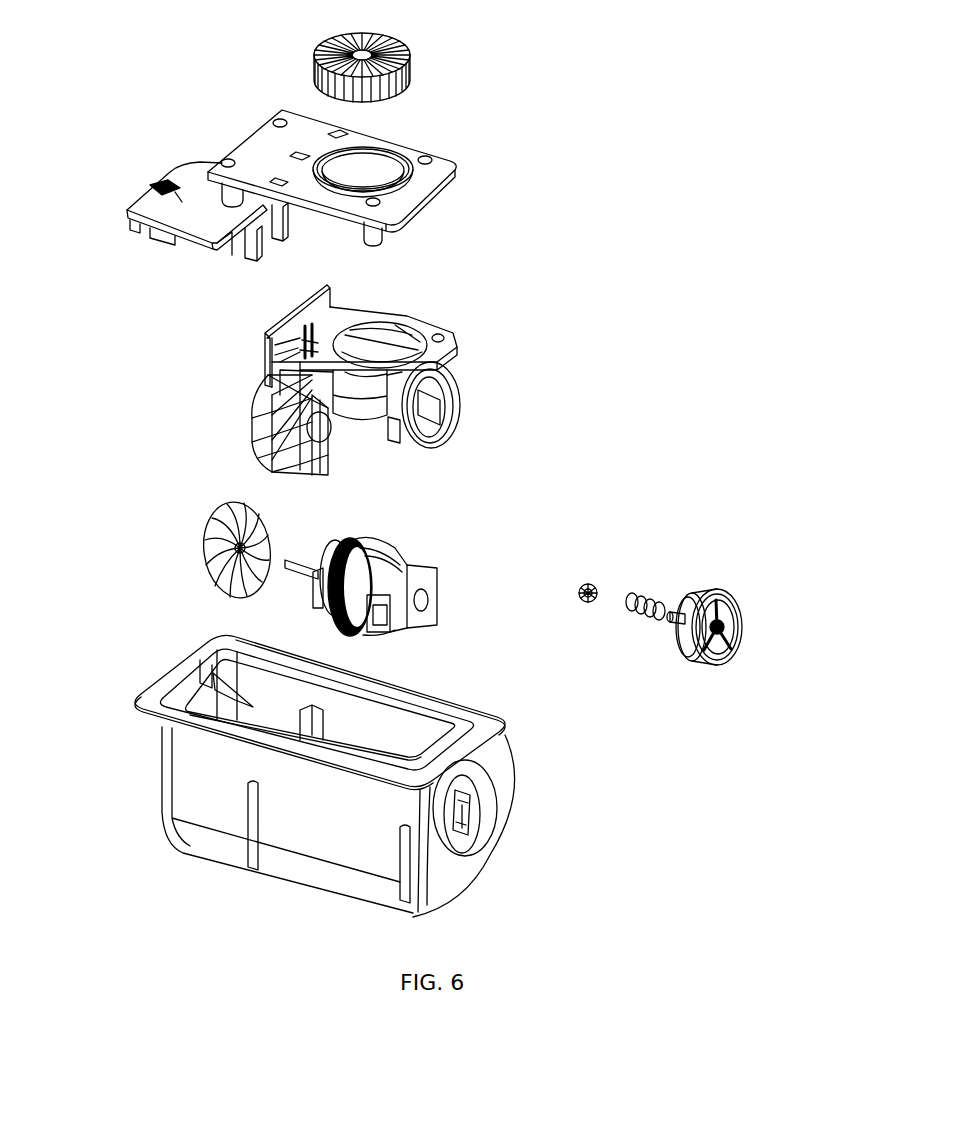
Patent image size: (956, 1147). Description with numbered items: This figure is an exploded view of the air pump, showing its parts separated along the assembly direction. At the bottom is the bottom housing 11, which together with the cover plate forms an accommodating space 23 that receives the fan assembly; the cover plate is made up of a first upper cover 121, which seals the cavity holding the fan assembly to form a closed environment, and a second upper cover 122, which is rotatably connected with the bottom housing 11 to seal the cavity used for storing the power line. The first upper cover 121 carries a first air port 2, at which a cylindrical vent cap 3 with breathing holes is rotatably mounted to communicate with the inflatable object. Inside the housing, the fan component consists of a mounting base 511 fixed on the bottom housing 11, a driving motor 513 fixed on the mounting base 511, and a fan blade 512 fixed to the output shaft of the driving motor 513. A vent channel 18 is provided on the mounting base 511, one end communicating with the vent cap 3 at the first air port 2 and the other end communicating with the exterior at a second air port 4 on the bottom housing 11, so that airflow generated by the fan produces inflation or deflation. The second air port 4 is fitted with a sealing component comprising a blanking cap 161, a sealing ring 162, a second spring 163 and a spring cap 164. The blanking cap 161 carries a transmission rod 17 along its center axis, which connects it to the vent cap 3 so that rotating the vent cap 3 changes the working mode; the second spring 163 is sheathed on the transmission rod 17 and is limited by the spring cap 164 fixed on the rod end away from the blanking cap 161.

The first air port 2 is at (386, 156).
The vent cap 3 is at (398, 36).
The second air port 4 is at (463, 853).
The bottom housing 11 is at (299, 768).
The transmission rod 17 is at (753, 602).
The vent channel 18 is at (422, 345).
The accommodating space 23 is at (253, 707).
The first upper cover 121 is at (425, 175).
The second upper cover 122 is at (182, 213).
The blanking cap 161 is at (727, 595).
The sealing ring 162 is at (693, 600).
The second spring 163 is at (640, 617).
The spring cap 164 is at (592, 580).
The mounting base 511 is at (450, 342).
The fan blade 512 is at (205, 528).
The driving motor 513 is at (407, 553).